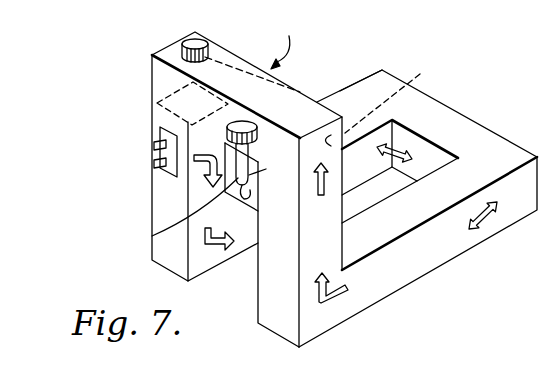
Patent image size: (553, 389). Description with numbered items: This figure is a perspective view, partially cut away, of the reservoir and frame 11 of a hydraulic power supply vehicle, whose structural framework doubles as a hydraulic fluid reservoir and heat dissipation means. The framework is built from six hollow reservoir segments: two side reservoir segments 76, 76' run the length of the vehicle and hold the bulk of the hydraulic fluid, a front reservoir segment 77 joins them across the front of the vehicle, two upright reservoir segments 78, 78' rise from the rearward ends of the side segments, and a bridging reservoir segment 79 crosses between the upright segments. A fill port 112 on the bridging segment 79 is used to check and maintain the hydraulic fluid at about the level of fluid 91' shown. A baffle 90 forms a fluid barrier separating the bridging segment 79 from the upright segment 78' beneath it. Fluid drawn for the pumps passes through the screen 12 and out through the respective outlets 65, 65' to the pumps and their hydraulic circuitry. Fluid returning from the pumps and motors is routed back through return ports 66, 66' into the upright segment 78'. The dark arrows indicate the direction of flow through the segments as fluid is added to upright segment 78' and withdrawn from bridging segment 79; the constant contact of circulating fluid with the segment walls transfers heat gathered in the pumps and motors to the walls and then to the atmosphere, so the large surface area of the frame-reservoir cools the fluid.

The reservoir and frame 11 is at (282, 43).
The screen 12 is at (261, 74).
The outlet 65 is at (171, 218).
The outlet 65' is at (262, 180).
The return port 66 is at (132, 139).
The return port 66' is at (126, 163).
The side reservoir segment 76 is at (418, 252).
The side reservoir segment 76' is at (361, 65).
The front reservoir segment 77 is at (458, 122).
The upright reservoir segment 78 is at (393, 180).
The upright reservoir segment 78' is at (210, 201).
The bridging reservoir segment 79 is at (166, 47).
The baffle 90 is at (157, 103).
The level of fluid 91' is at (389, 101).
The fill port 112 is at (200, 38).